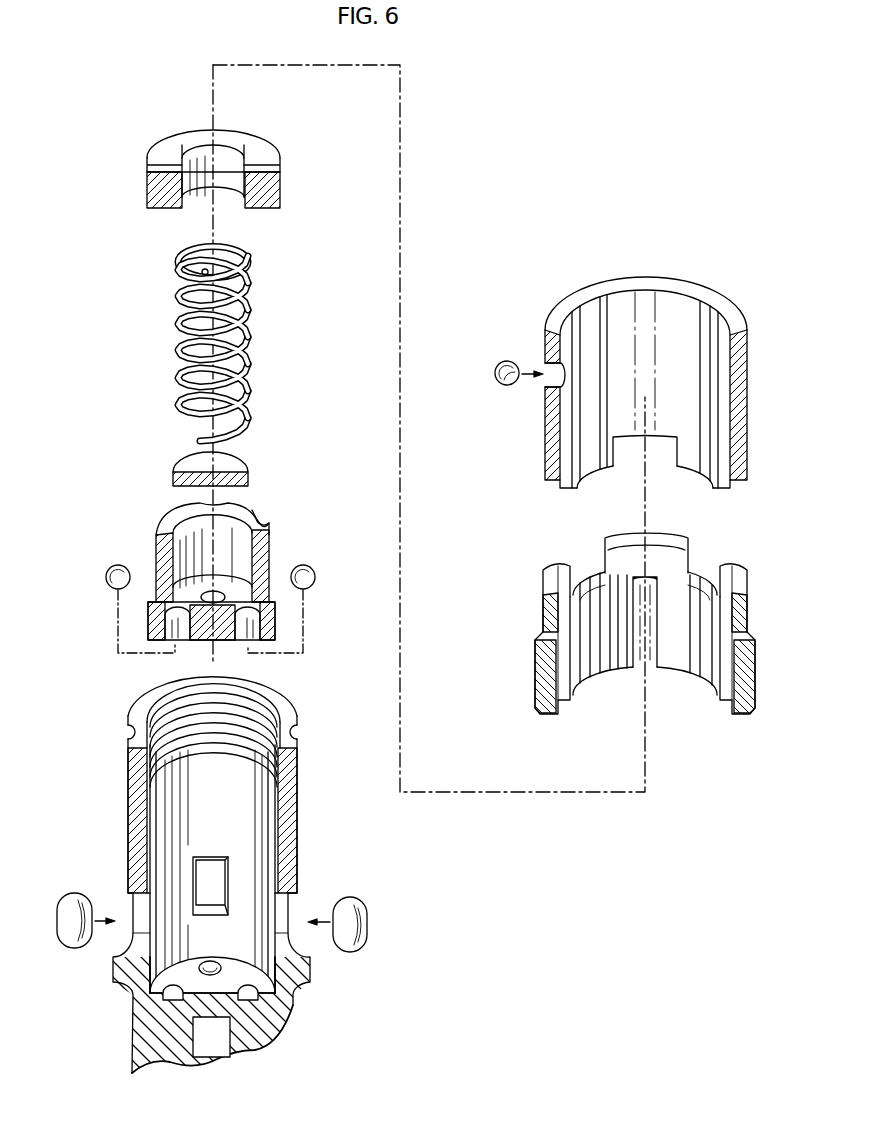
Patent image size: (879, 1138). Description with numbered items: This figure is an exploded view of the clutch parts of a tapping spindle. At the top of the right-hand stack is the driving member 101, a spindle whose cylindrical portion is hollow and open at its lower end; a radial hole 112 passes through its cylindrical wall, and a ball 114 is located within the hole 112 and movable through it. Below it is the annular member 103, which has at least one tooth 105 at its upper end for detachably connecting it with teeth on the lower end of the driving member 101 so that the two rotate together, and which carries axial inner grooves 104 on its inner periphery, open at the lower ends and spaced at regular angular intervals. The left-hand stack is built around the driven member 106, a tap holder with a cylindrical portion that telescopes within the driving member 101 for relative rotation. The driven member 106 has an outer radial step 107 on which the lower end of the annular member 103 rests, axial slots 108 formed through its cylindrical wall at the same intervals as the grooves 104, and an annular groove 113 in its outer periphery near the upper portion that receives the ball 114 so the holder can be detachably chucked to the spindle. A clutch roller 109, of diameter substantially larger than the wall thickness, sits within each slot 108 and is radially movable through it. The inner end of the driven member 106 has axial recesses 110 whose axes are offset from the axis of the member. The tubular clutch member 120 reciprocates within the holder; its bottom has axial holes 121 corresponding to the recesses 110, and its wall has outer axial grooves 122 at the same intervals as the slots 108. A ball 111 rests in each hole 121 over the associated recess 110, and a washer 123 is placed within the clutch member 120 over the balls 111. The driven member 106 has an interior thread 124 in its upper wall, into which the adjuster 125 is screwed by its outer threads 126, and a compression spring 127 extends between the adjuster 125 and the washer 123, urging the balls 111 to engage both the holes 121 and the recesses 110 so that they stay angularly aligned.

The driving member 101 is at (612, 358).
The annular member 103 is at (616, 635).
The axial inner groove 104 is at (640, 668).
The tooth 105 is at (550, 585).
The driven member 106 is at (243, 875).
The outer radial step 107 is at (300, 972).
The axial slot 108 is at (285, 905).
The clutch roller 109 is at (370, 928).
The axial recess 110 is at (250, 997).
The ball 111 is at (312, 568).
The radial hole 112 is at (548, 386).
The annular groove 113 is at (299, 740).
The ball 114 is at (502, 362).
The clutch member 120 is at (168, 522).
The axial hole 121 is at (255, 623).
The axial groove 122 is at (260, 527).
The washer 123 is at (235, 462).
The interior thread 124 is at (255, 712).
The adjuster 125 is at (255, 145).
The outer thread 126 is at (282, 192).
The compression spring 127 is at (250, 338).